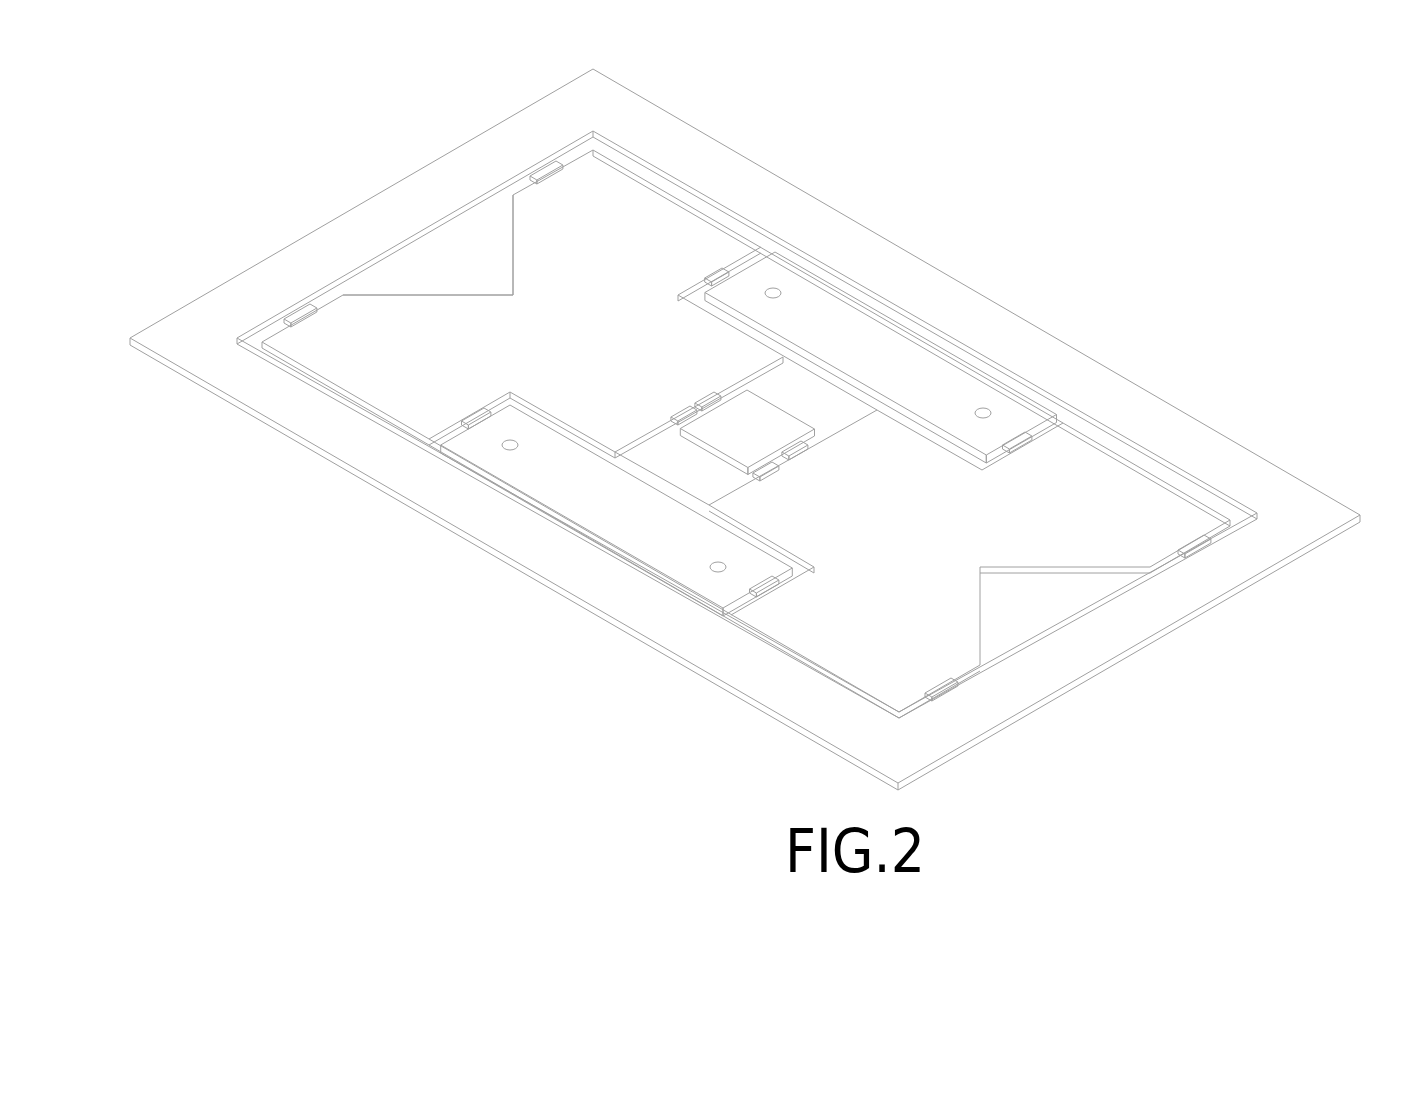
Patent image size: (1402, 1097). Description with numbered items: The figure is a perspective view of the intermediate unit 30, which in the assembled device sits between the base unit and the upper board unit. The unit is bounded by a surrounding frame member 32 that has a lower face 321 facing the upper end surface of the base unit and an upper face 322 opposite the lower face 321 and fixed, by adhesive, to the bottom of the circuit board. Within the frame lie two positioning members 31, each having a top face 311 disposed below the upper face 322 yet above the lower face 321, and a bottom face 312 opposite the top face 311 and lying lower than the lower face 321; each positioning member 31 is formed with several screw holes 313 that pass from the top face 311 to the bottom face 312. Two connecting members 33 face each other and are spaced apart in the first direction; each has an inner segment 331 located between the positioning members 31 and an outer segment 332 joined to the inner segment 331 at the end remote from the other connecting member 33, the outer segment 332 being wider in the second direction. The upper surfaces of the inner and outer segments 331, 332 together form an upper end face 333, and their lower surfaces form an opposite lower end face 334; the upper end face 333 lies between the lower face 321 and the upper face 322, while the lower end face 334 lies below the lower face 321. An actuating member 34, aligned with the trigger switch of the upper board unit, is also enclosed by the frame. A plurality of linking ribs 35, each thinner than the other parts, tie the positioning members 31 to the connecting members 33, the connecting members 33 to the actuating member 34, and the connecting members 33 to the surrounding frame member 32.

The intermediate unit 30 is at (992, 297).
The positioning member 31 is at (622, 518).
The top face 311 is at (978, 393).
The bottom face 312 is at (820, 370).
The screw hole 313 is at (774, 288).
The surrounding frame member 32 is at (754, 432).
The lower face 321 is at (1040, 710).
The upper face 322 is at (1250, 553).
The connecting member 33 is at (645, 238).
The inner segment 331 is at (792, 482).
The outer segment 332 is at (832, 447).
The upper end face 333 is at (1035, 527).
The lower end face 334 is at (1032, 572).
The actuating member 34 is at (763, 423).
The linking rib 35 is at (548, 168).